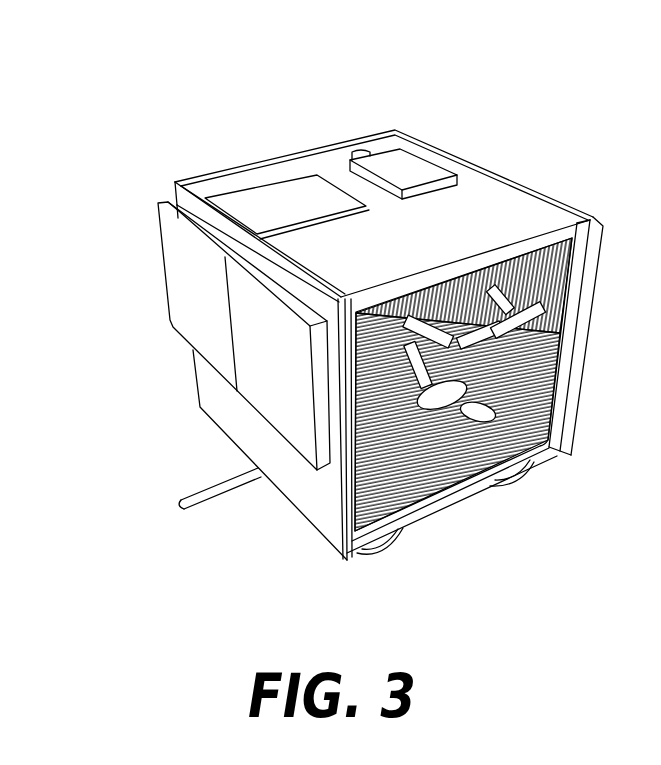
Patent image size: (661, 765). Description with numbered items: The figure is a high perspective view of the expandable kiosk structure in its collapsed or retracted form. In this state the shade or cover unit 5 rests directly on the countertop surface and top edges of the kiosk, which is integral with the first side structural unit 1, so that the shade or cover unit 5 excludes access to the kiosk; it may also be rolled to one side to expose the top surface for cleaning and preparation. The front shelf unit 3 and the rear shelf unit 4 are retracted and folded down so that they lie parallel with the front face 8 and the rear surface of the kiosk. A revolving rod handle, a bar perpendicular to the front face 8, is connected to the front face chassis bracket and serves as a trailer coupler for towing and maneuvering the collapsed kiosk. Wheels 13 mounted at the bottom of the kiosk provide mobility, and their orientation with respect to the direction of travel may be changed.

The first side structural unit 1 is at (475, 487).
The front shelf unit 3 is at (176, 298).
The rear shelf unit 4 is at (597, 293).
The shade or cover unit 5 is at (470, 182).
The front face 8 is at (228, 413).
The wheels 13 is at (363, 557).